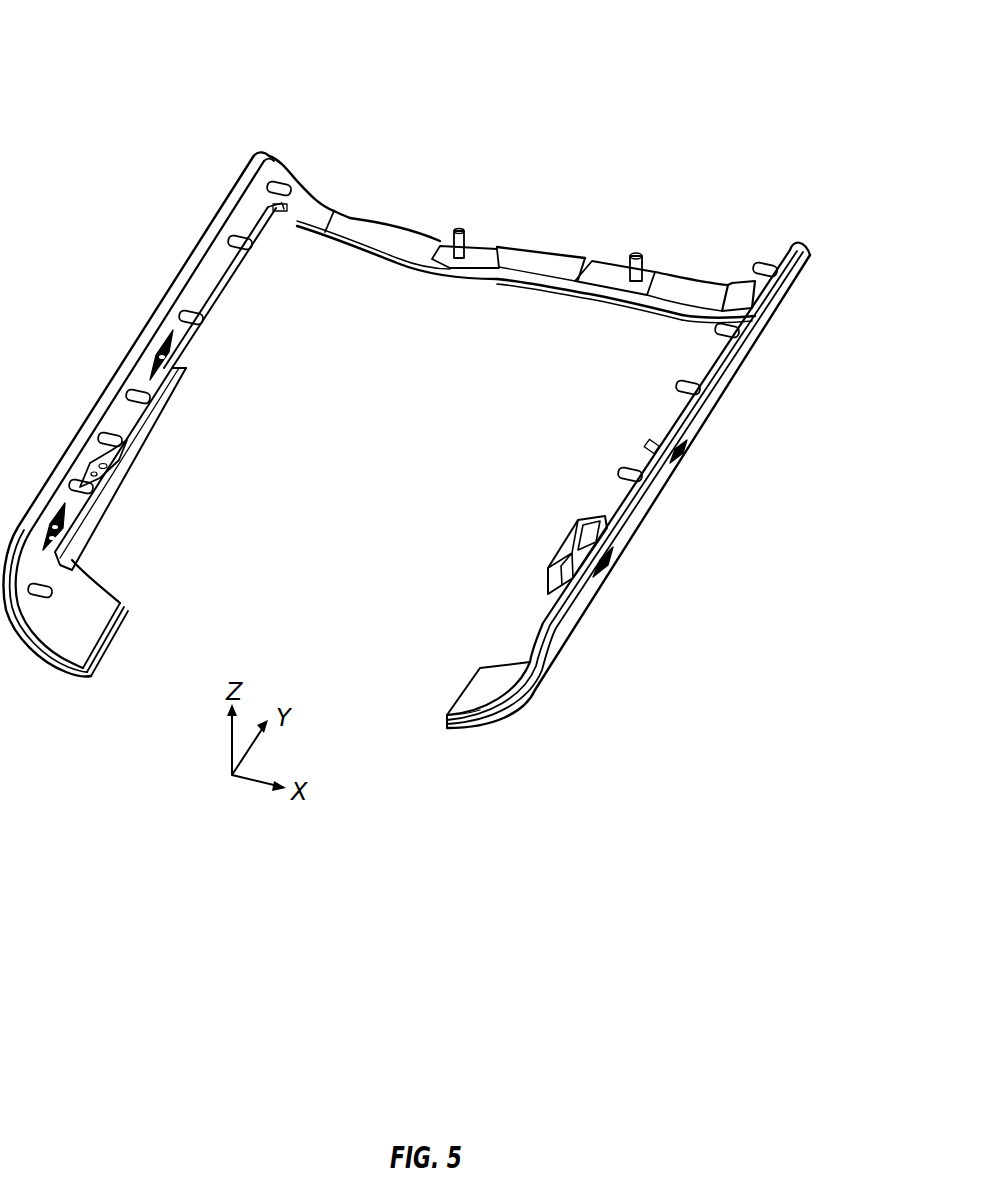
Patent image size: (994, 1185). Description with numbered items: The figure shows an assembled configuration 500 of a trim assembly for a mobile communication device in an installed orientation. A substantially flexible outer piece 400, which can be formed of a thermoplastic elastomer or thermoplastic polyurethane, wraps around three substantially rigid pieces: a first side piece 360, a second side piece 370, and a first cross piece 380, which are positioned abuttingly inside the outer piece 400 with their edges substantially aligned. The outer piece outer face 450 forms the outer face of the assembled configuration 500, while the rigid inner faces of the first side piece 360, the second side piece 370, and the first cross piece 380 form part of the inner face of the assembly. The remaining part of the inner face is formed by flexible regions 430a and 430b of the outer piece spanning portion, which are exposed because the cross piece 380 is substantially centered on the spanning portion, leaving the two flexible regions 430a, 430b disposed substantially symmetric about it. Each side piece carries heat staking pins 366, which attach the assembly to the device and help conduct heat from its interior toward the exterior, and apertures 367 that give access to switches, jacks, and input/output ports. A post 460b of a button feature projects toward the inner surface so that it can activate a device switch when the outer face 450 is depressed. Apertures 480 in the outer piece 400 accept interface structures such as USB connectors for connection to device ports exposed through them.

The assembled configuration 500 is at (188, 50).
The outer piece 400 is at (255, 157).
The first side piece 360 is at (268, 158).
The flexible region 430a is at (384, 233).
The first cross piece 380 is at (545, 260).
The flexible region 430b is at (683, 290).
The outer piece outer face 450 is at (777, 303).
The heat staking pins 366 is at (676, 385).
The apertures 367 is at (174, 338).
The post 460b is at (168, 353).
The apertures 480 is at (614, 562).
The second side piece 370 is at (445, 719).